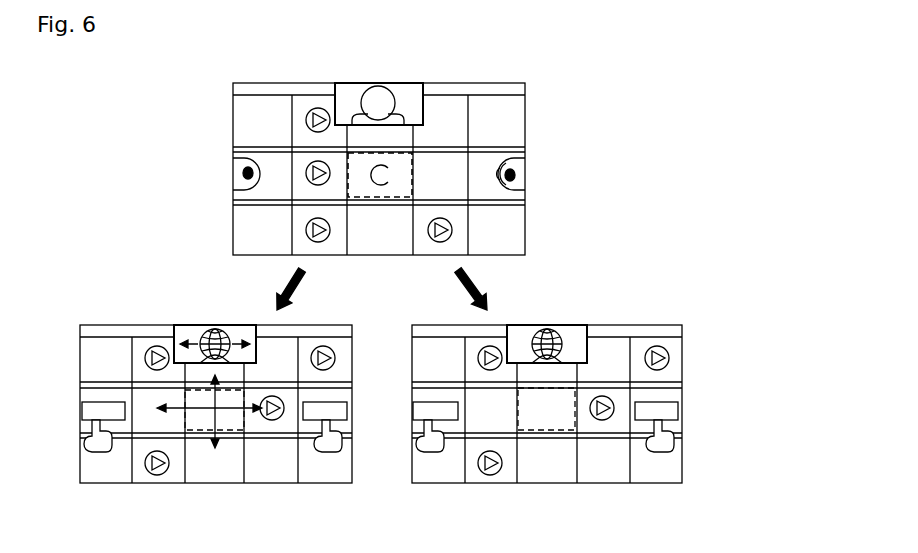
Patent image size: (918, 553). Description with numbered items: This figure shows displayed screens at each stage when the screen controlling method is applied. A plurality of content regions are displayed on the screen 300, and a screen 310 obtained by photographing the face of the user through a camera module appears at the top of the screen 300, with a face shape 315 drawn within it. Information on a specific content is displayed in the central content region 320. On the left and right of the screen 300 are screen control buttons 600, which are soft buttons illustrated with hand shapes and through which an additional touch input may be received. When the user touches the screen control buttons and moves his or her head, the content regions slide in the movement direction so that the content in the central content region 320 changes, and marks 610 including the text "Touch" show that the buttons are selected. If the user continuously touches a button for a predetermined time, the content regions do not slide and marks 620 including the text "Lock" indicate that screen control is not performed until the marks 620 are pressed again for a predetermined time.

The screen 300 is at (525, 84).
The screen obtained by photographing the face of the user 310 is at (420, 83).
The user icon 315 is at (394, 83).
The central content region 320 is at (412, 185).
The screen control buttons 600 is at (240, 172).
The marks representing that the screen control buttons are touched 610 is at (92, 401).
The marks representing that screen control is not performed 620 is at (424, 401).